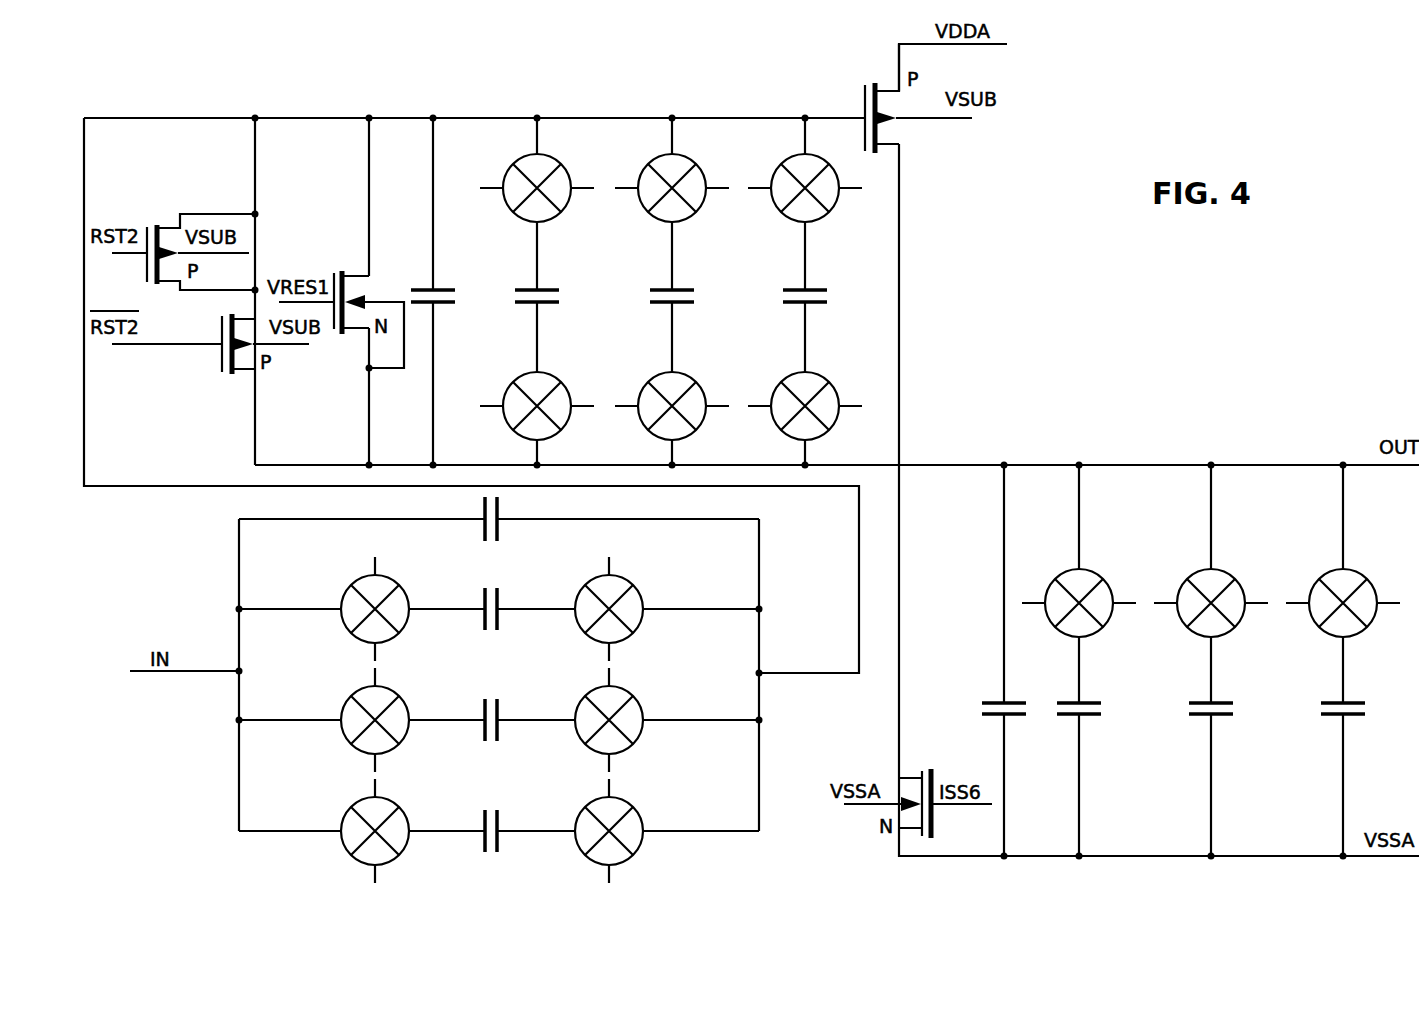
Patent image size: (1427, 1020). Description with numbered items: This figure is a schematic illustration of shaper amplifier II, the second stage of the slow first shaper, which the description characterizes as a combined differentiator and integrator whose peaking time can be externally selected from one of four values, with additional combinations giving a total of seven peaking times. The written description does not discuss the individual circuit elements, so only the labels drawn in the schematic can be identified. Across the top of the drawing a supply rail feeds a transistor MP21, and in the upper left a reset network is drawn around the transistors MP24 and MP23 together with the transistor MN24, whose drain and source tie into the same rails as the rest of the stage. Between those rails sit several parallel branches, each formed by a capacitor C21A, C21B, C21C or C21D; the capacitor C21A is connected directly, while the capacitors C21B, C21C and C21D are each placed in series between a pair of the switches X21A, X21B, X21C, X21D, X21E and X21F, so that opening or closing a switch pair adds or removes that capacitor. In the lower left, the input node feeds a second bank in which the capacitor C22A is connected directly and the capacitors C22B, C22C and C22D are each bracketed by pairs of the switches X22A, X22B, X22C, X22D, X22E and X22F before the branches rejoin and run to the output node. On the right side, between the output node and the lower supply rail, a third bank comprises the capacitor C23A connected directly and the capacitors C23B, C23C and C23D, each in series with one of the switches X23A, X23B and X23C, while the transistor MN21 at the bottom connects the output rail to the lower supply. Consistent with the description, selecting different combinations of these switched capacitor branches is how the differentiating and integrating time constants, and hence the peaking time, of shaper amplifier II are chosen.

The PMOS transistor MP21 is at (922, 98).
The PMOS reset transistor MP23 is at (210, 358).
The PMOS reset transistor MP24 is at (183, 237).
The NMOS transistor MN24 is at (341, 303).
The NMOS current source transistor MN21 is at (915, 790).
The CMOS switch X21A is at (534, 178).
The CMOS switch X21B is at (669, 178).
The CMOS switch X21C is at (802, 178).
The CMOS switch X21D is at (534, 396).
The CMOS switch X21E is at (669, 396).
The CMOS switch X21F is at (803, 396).
The capacitor C21A (120f) C21A is at (452, 297).
The capacitor C21B (640f) C21B is at (555, 296).
The capacitor C21C (1.12p) C21C is at (692, 296).
The capacitor C21D (6.5p) C21D is at (823, 296).
The CMOS switch X22A is at (360, 608).
The CMOS switch X22B is at (360, 718).
The CMOS switch X22C is at (360, 829).
The CMOS switch X22D is at (593, 607).
The CMOS switch X22E is at (593, 718).
The CMOS switch X22F is at (593, 829).
The capacitor C22A (180f) C22A is at (493, 522).
The capacitor C22B (960f) C22B is at (491, 606).
The capacitor C22C (1.68p) C22C is at (496, 717).
The capacitor C22D (9.75p) C22D is at (491, 828).
The CMOS switch X23A is at (1079, 591).
The CMOS switch X23B is at (1211, 591).
The CMOS switch X23C is at (1343, 591).
The capacitor C23A (180f) C23A is at (988, 710).
The capacitor C23B (960f) C23B is at (1098, 710).
The capacitor C23C (1.68p) C23C is at (1232, 710).
The capacitor C23D (12.18p) C23D is at (1369, 710).